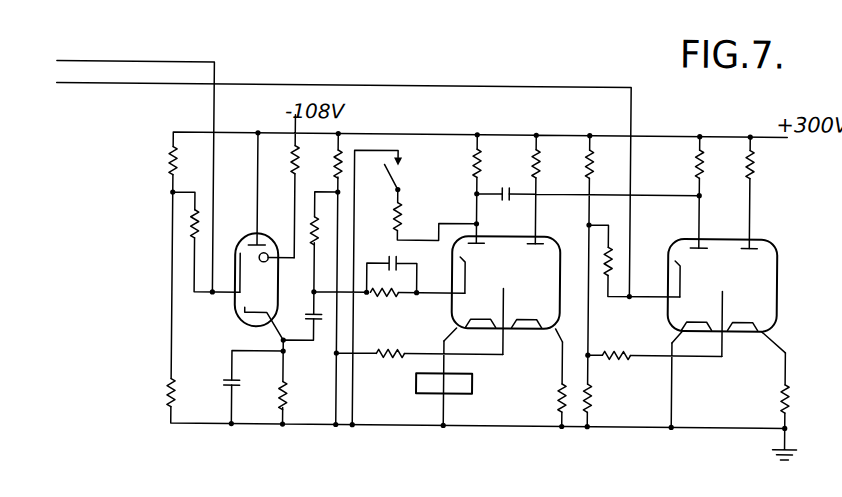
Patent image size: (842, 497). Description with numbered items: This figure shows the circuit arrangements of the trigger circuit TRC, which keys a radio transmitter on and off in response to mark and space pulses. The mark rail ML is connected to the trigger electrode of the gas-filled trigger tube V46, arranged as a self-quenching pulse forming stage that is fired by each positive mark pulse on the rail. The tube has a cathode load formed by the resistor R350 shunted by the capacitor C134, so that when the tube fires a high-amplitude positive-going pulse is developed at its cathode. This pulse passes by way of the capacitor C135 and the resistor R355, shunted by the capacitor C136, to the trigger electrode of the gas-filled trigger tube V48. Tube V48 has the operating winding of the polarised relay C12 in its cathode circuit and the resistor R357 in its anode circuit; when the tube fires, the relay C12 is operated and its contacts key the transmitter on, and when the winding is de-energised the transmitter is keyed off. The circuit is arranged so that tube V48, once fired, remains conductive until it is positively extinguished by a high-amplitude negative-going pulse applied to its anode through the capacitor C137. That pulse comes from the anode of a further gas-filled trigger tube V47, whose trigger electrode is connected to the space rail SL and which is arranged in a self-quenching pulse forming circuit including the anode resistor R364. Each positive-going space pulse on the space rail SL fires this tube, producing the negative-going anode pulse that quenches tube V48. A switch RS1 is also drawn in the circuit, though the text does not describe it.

The mark rail ML is at (178, 64).
The space rail SL is at (184, 86).
The trigger circuit TRC is at (470, 114).
The gas-filled trigger tube V46 is at (257, 236).
The capacitor C134 is at (216, 369).
The capacitor C135 is at (300, 298).
The resistor R350 is at (300, 384).
The relay switch RS1 is at (410, 176).
The resistor R355 is at (386, 306).
The capacitor C136 is at (408, 271).
The resistor R357 is at (474, 167).
The capacitor C137 is at (510, 182).
The gas-filled trigger tube V48 is at (504, 286).
The relay C12 is at (417, 385).
The anode resistor R364 is at (678, 163).
The gas-filled trigger tube V47 is at (732, 289).